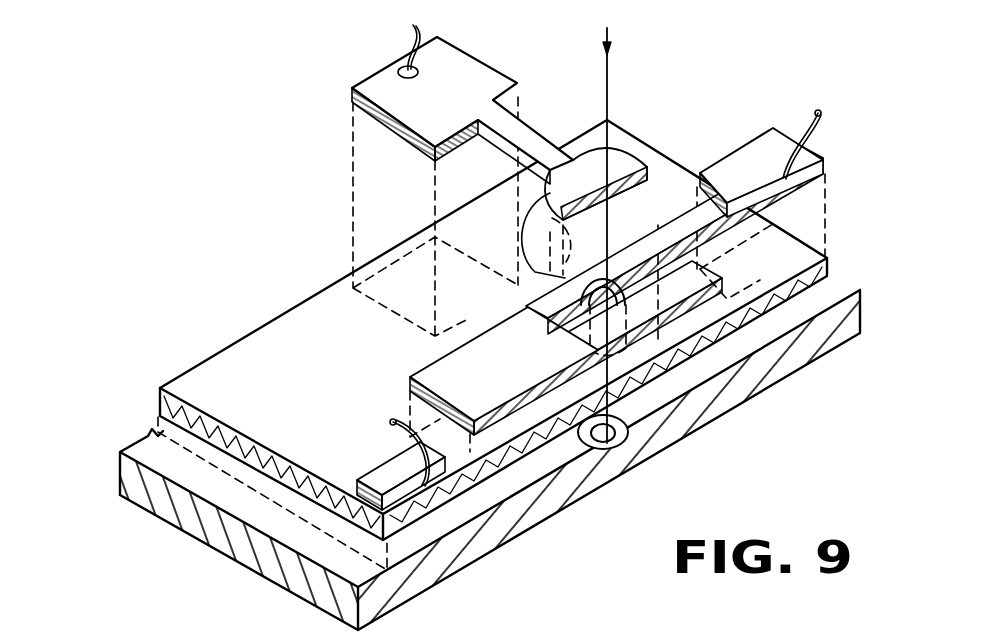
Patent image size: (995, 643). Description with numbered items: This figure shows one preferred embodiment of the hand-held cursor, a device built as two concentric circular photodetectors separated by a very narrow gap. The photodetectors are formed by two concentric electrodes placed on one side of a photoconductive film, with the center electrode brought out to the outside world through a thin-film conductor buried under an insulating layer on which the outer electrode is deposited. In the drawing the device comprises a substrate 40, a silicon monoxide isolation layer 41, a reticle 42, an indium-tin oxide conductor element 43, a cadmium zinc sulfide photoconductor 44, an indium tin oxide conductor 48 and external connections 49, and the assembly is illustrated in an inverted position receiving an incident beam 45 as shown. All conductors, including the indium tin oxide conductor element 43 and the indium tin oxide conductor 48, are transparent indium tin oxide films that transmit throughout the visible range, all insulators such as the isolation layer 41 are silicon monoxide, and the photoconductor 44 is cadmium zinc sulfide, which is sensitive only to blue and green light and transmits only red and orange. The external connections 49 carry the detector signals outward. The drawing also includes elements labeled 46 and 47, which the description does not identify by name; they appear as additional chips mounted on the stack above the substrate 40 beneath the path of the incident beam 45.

The substrate 40 is at (440, 582).
The silicon monoxide isolation layer 41 is at (453, 495).
The reticle 42 is at (613, 447).
The indium-tin oxide conductor element 43 is at (648, 285).
The cadmium zinc sulfide photoconductor 44 is at (653, 197).
The incident beam 45 is at (607, 77).
The detector chip 46 is at (373, 470).
The detector chip 47 is at (430, 370).
The indium tin oxide conductor 48 is at (382, 117).
The external connections 49 is at (413, 25).